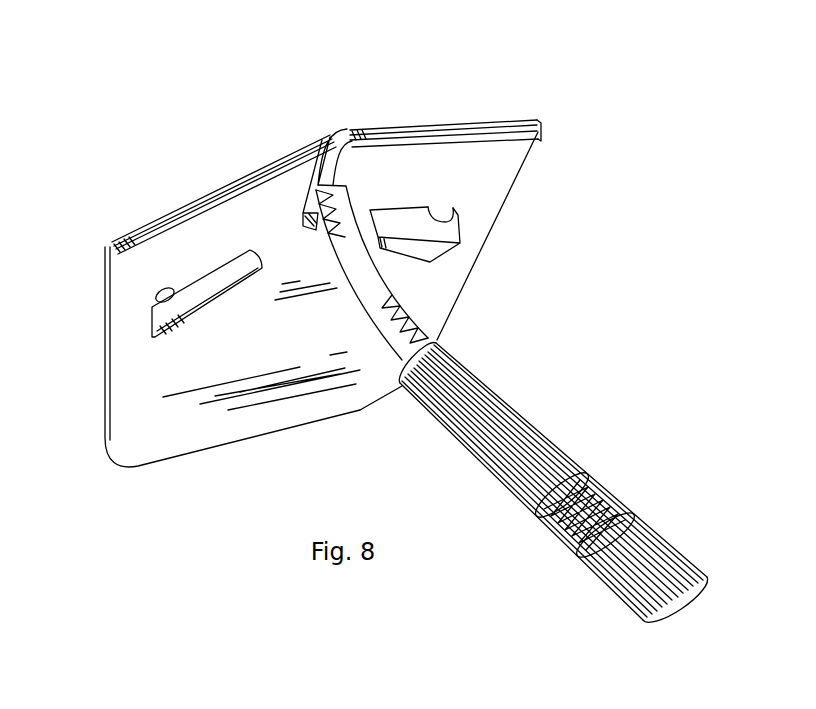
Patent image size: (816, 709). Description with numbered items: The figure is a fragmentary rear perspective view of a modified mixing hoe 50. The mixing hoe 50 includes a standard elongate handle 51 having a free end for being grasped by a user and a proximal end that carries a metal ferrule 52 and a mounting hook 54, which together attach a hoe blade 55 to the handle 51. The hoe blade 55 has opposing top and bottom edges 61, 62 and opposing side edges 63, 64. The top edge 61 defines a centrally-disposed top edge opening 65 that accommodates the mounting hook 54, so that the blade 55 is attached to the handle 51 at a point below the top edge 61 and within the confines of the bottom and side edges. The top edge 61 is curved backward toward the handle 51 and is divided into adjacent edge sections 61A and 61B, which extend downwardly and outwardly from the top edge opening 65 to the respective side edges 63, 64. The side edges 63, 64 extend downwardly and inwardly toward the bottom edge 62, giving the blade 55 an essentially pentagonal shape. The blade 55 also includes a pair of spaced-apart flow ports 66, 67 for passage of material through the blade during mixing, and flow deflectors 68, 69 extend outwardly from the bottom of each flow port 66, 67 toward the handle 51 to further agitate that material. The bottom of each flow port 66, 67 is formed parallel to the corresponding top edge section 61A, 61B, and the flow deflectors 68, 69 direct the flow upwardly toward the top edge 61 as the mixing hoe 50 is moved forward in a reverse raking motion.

The mixing hoe 50 is at (640, 236).
The elongate handle 51 is at (658, 540).
The metal ferrule 52 is at (545, 427).
The mounting hook 54 is at (387, 292).
The hoe blade 55 is at (138, 418).
The top edge 61 is at (503, 121).
The top edge section 61A is at (437, 122).
The top edge section 61B is at (190, 203).
The bottom edge 62 is at (358, 410).
The side edge 63 is at (447, 318).
The side edge 64 is at (104, 402).
The top edge opening 65 is at (330, 137).
The flow port 66 is at (450, 215).
The flow port 67 is at (155, 297).
The flow deflector 68 is at (430, 250).
The flow deflector 69 is at (178, 316).